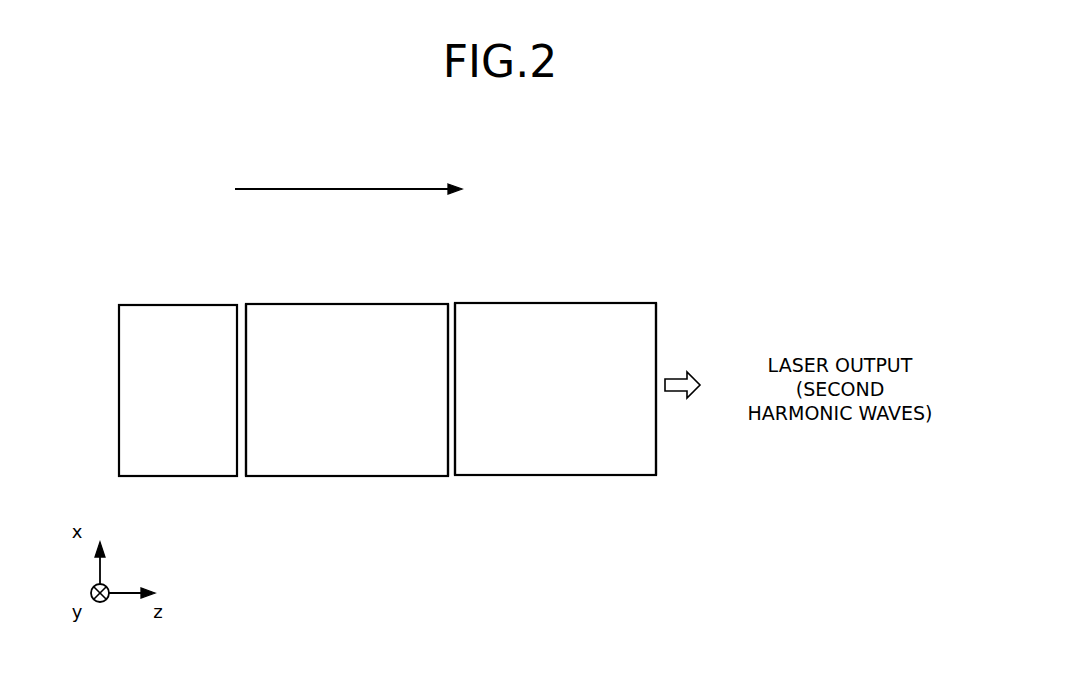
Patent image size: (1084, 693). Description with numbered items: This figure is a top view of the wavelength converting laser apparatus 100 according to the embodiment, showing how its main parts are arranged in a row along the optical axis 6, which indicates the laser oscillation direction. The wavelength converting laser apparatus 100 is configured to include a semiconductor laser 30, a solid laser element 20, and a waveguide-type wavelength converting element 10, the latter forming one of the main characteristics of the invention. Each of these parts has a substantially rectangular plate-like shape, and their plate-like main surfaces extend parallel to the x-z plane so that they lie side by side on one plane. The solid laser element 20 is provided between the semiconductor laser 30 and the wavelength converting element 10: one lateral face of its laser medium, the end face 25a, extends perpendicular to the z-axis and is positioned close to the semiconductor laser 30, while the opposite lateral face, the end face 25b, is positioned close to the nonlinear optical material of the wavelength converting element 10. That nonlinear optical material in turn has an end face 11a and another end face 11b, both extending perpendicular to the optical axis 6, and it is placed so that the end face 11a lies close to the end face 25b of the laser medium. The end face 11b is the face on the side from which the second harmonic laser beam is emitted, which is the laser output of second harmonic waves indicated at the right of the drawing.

The wavelength converting laser apparatus 100 is at (678, 188).
The optical axis 6 is at (372, 187).
The semiconductor laser 30 is at (175, 302).
The solid laser element 20 is at (346, 302).
The end face 25a is at (246, 421).
The end face 25b is at (448, 421).
The wavelength converting element 10 is at (570, 302).
The end face 11a is at (455, 435).
The end face 11b is at (656, 452).